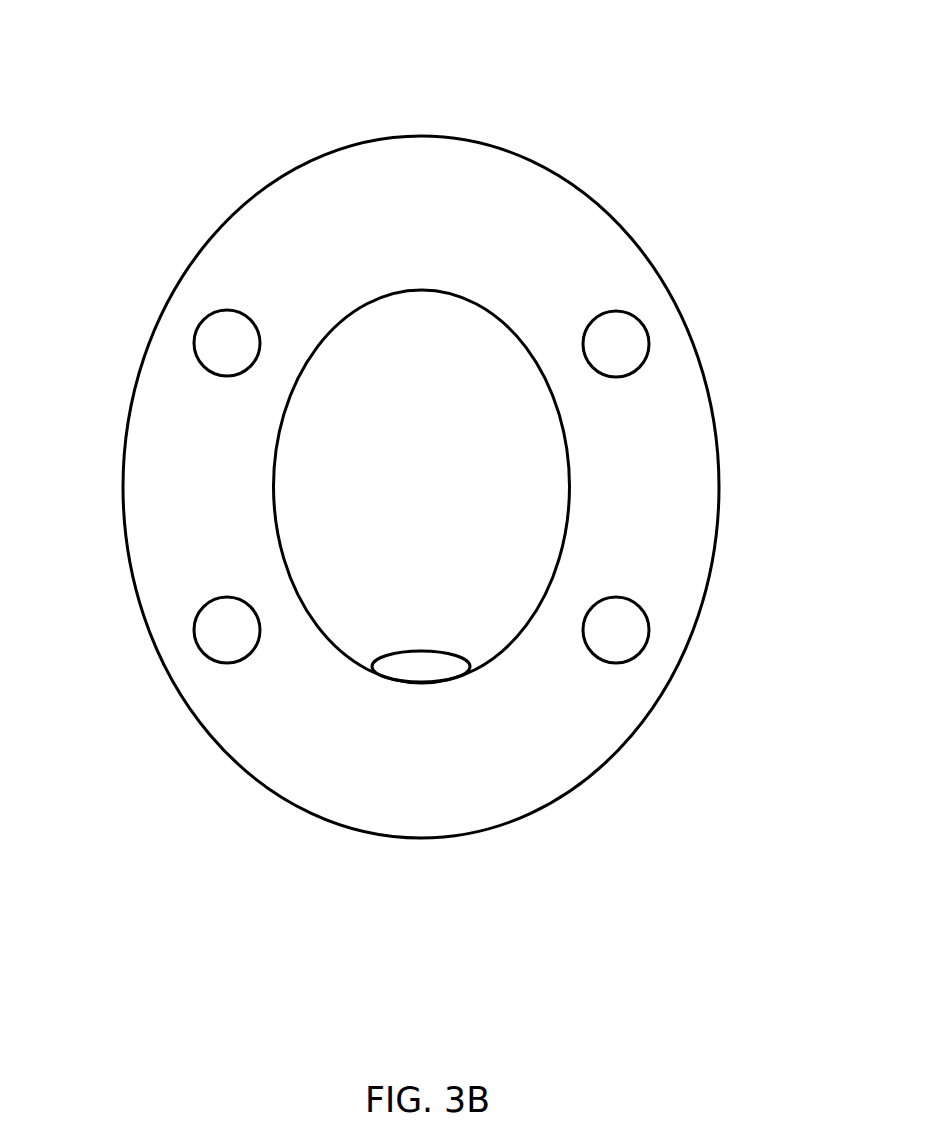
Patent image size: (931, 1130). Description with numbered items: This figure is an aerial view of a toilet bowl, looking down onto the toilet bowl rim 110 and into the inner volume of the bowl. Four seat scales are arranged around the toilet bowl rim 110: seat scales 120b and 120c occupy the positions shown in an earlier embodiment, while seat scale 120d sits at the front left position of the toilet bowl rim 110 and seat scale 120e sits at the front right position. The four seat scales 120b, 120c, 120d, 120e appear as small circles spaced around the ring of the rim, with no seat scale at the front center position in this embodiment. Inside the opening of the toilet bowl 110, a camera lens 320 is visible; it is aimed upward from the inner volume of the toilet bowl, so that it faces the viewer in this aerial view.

The toilet bowl rim 110 is at (403, 230).
The seat scale 120b is at (227, 633).
The seat scale 120c is at (622, 643).
The seat scale 120d is at (227, 338).
The seat scale 120e is at (625, 343).
The camera lens 320 is at (422, 662).